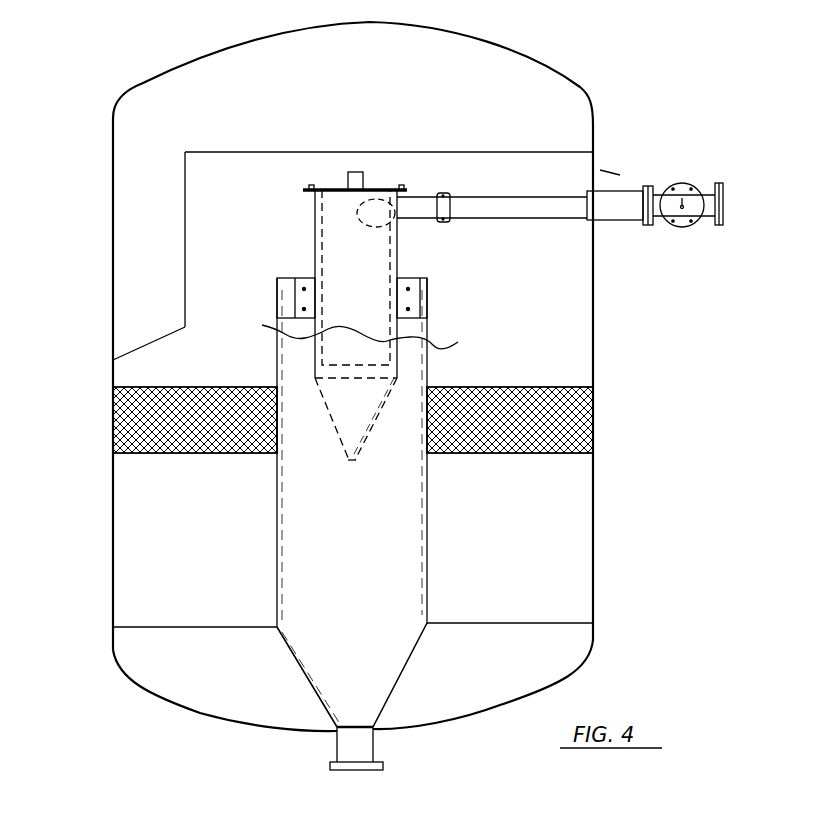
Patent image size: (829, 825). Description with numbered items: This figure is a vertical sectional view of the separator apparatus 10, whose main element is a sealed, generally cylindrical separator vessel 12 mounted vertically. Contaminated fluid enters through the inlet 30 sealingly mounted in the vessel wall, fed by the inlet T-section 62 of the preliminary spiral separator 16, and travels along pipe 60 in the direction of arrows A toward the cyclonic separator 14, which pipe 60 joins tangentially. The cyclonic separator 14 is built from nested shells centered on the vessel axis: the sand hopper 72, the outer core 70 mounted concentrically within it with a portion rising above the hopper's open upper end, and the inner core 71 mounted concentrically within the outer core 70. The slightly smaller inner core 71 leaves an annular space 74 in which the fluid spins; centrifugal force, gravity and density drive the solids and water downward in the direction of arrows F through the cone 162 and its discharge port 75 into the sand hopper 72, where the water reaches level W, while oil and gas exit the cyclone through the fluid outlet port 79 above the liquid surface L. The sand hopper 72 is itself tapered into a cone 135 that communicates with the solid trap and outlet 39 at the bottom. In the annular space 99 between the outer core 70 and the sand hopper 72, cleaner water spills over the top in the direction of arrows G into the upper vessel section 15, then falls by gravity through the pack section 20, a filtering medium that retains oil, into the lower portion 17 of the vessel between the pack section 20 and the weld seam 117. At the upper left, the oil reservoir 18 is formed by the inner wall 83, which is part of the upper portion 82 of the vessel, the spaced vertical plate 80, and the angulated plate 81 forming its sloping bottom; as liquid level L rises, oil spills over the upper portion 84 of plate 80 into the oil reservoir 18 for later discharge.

The apparatus 10 is at (575, 64).
The separator vessel 12 is at (594, 336).
The cyclonic separator 14 is at (265, 222).
The upper vessel section 15 is at (246, 378).
The preliminary spiral separator 16 is at (626, 170).
The lower portion of vessel 17 is at (227, 513).
The oil reservoir 18 is at (147, 158).
The pack section 20 is at (176, 386).
The inlet 30 is at (647, 226).
The solid trap and outlet 39 is at (372, 772).
The pipe 60 is at (494, 197).
The inlet T-section 62 is at (698, 180).
The outer core 70 is at (404, 258).
The inner core 71 is at (324, 256).
The sand hopper 72 is at (432, 566).
The annular space 74 is at (313, 190).
The discharge port 75 is at (352, 462).
The fluid outlet port 79 is at (365, 185).
The vertical plate 80 is at (186, 252).
The angulated plate 81 is at (135, 352).
The upper portion of vessel 82 is at (113, 293).
The inner wall 83 is at (114, 253).
The upper portion of plate 84 is at (186, 152).
The annular space 99 is at (307, 369).
The weld seam 117 is at (145, 627).
The cone 135 is at (403, 664).
The cone 162 is at (332, 426).
The arrows A is at (520, 207).
The arrows F is at (343, 396).
The arrows G is at (300, 272).
The liquid surface level L is at (452, 152).
The water level W is at (292, 332).